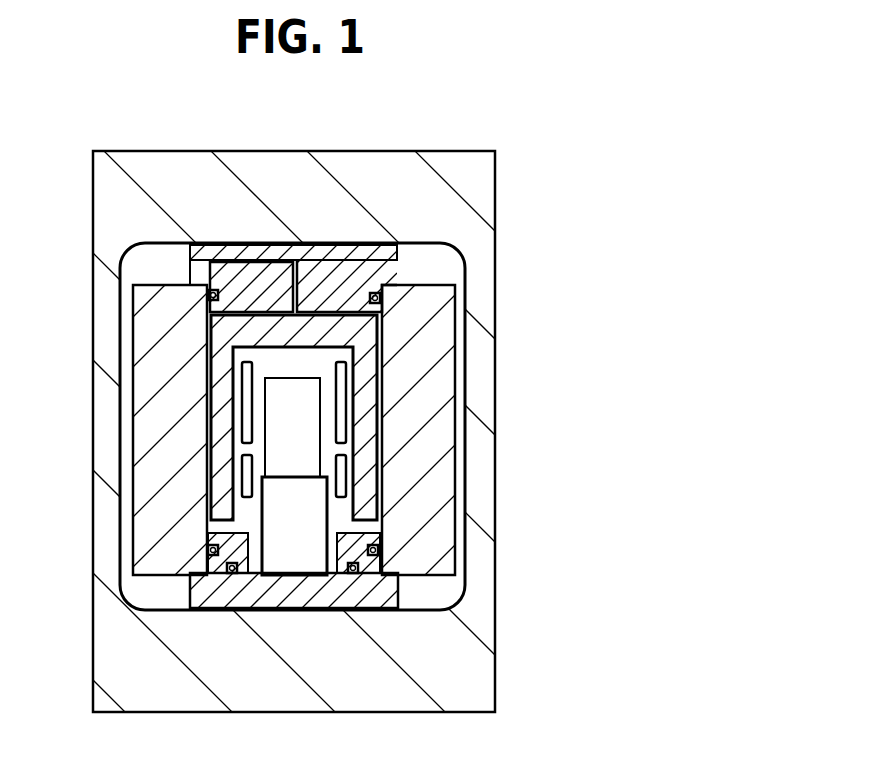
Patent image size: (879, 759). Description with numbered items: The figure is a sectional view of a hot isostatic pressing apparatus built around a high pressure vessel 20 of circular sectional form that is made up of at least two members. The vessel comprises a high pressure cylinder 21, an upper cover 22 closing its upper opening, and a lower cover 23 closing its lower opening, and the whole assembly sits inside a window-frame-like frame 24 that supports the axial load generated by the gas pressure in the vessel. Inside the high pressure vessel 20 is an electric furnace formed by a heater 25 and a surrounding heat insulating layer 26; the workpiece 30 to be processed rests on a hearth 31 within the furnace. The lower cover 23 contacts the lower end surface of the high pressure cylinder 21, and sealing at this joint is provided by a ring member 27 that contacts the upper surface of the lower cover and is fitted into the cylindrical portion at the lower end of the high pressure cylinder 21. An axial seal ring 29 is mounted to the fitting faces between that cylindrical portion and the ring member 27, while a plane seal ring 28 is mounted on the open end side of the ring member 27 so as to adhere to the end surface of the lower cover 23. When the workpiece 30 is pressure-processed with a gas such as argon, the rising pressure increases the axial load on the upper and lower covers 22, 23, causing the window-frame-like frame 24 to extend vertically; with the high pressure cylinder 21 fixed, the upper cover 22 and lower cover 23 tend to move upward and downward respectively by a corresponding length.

The high pressure vessel 20 is at (434, 282).
The high pressure cylinder 21 is at (425, 342).
The upper cover 22 is at (367, 258).
The lower cover 23 is at (385, 592).
The window-frame-like frame 24 is at (273, 176).
The heater 25 is at (340, 466).
The heat insulating layer 26 is at (363, 398).
The ring member 27 is at (378, 526).
The plane seal ring 28 is at (355, 572).
The axial seal ring 29 is at (383, 548).
The workpiece 30 is at (283, 418).
The hearth 31 is at (280, 522).